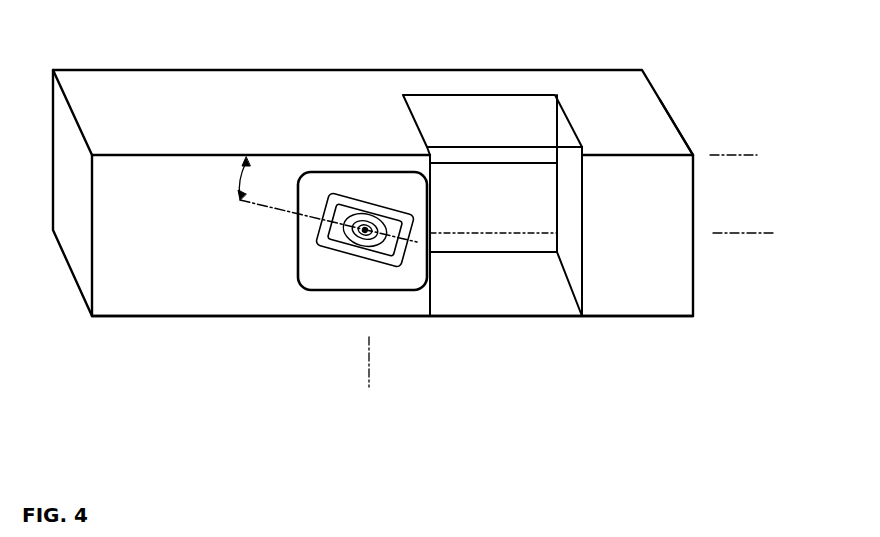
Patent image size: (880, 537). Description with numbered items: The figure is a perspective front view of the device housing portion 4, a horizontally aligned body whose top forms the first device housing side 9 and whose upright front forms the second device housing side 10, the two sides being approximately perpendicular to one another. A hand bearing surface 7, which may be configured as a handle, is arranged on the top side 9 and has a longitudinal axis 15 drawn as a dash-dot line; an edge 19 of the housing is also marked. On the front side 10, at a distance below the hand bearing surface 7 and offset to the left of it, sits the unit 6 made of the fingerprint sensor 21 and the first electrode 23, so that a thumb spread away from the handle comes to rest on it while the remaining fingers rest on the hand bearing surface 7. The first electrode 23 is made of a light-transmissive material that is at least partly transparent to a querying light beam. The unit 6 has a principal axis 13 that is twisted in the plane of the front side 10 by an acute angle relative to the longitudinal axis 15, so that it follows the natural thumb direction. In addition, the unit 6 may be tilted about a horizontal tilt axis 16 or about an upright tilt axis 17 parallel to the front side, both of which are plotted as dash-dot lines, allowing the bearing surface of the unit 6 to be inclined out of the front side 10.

The device housing portion 4 is at (141, 67).
The first device housing side 9 is at (232, 83).
The second device housing side 10 is at (133, 308).
The hand bearing surface 7 is at (515, 148).
The edge 19 is at (673, 152).
The longitudinal axis 15 is at (735, 155).
The horizontal tilt axis 16 is at (734, 233).
The upright tilt axis 17 is at (367, 366).
The unit 6 is at (367, 214).
The principal axis 13 is at (273, 208).
The fingerprint sensor 21 is at (355, 238).
The first electrode 23 is at (366, 237).